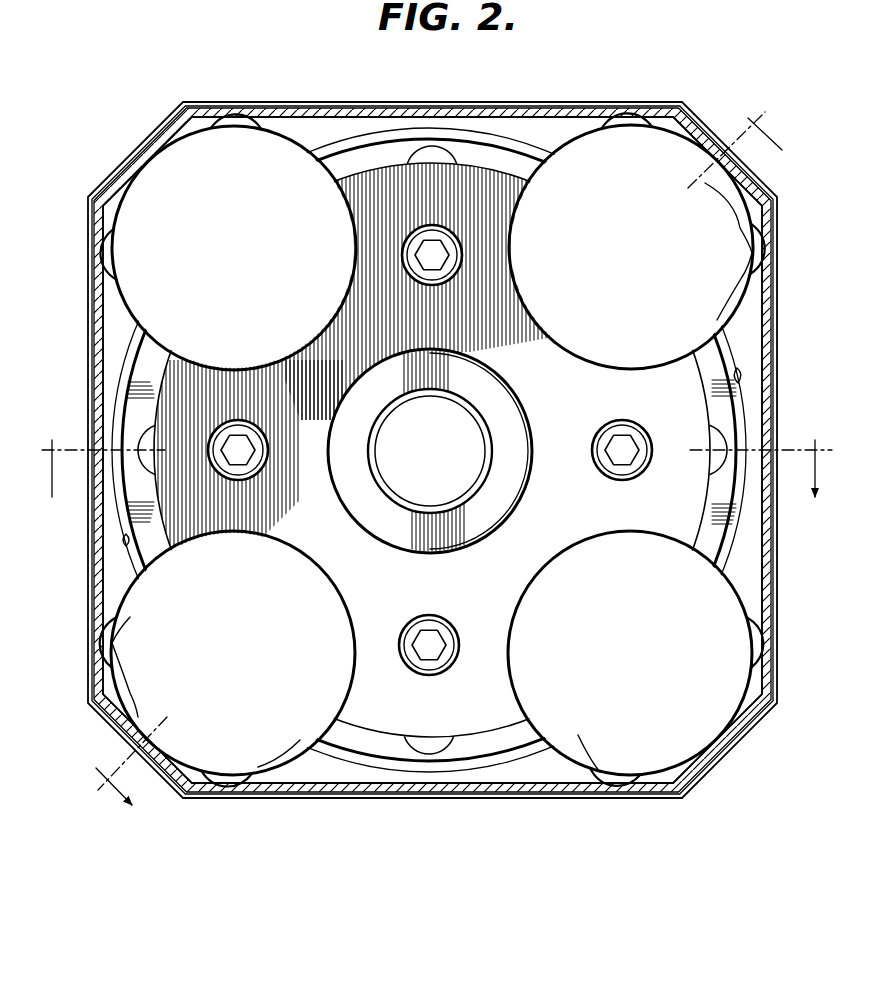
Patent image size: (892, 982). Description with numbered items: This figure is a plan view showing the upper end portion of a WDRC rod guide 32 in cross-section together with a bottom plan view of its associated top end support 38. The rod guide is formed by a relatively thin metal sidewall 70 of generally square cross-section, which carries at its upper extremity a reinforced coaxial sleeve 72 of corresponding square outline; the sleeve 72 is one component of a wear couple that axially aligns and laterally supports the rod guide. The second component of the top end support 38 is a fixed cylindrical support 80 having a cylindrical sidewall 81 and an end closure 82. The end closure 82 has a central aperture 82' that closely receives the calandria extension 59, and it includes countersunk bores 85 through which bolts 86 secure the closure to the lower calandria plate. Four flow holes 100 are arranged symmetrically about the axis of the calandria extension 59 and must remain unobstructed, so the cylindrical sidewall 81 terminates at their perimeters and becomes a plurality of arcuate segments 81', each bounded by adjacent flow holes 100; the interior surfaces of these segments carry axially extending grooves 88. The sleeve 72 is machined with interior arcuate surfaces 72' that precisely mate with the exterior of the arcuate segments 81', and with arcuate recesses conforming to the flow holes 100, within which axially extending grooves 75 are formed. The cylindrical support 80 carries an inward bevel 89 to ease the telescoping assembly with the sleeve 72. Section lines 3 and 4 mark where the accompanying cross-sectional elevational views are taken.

The WDRC rod guide 32 is at (787, 692).
The top end support 38 is at (518, 92).
The thin metal sidewall 70 is at (765, 312).
The reinforced sleeve 72 is at (432, 423).
The interior arcuate surfaces 72' is at (401, 448).
The axially extending grooves 75 is at (236, 128).
The fixed cylindrical support 80 is at (377, 768).
The cylindrical sidewall 81 is at (429, 462).
The arcuate segments 81' is at (431, 450).
The end closure 82 is at (362, 368).
The central aperture 82' is at (430, 434).
The countersunk bores 85 is at (452, 240).
The bolts 86 is at (428, 276).
The axially extending grooves 88 is at (432, 145).
The inward bevel 89 is at (467, 768).
The calandria extension 59 is at (360, 462).
The flow holes 100 is at (214, 254).
The section line 3— 3 is at (451, 472).
The section line 4— 4 is at (436, 490).